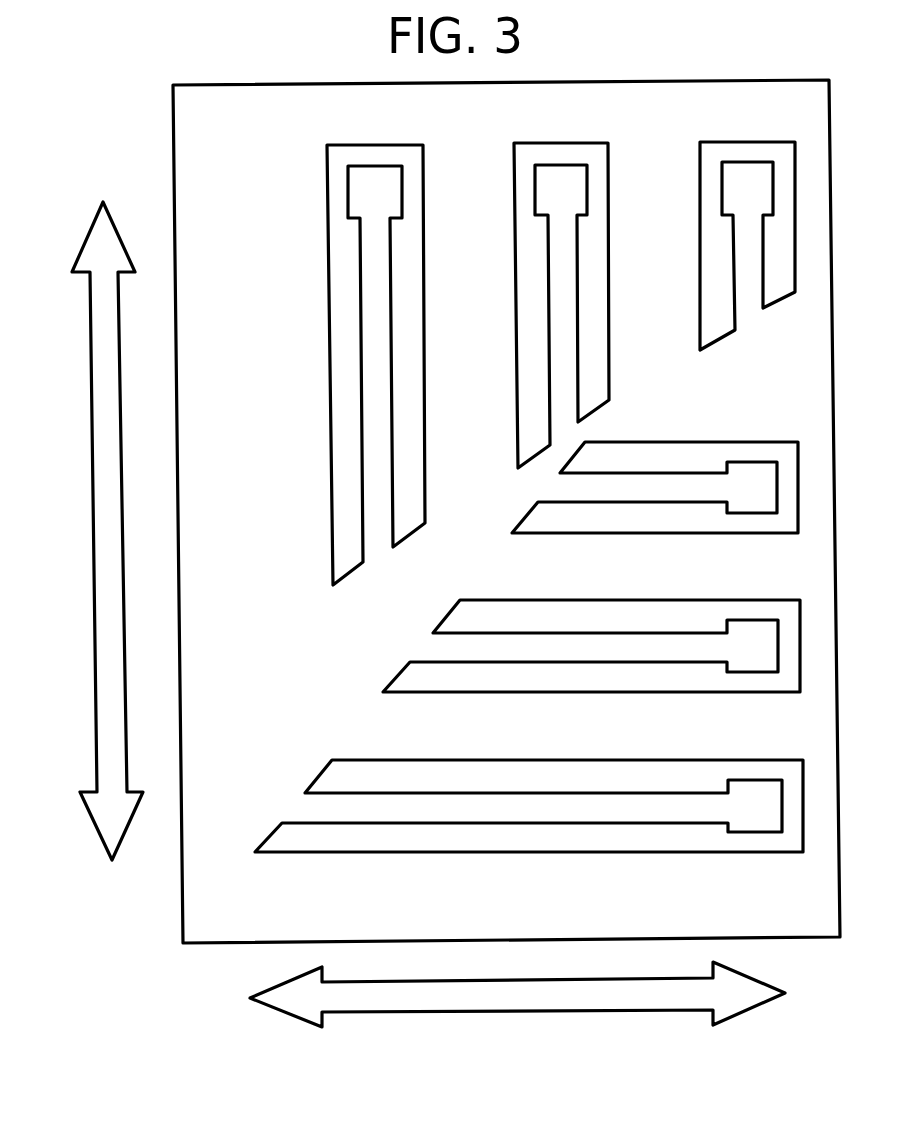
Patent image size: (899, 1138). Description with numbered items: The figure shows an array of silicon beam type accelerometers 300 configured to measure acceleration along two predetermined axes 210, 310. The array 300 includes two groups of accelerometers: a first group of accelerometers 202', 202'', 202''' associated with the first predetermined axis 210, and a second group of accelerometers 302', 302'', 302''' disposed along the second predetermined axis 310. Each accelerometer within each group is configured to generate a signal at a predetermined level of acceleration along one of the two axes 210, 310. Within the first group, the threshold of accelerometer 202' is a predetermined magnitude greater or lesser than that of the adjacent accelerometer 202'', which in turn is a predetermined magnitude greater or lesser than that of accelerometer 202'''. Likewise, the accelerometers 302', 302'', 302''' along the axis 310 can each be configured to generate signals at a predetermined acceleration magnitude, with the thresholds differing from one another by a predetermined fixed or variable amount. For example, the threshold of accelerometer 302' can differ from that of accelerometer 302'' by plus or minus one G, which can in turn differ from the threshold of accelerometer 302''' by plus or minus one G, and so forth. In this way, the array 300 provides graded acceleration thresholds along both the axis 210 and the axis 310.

The array of silicon beam type accelerometers 300 is at (140, 126).
The predetermined axis 310 is at (90, 540).
The predetermined axis 210 is at (508, 1012).
The accelerometer 202' is at (711, 246).
The accelerometer 202'' is at (527, 305).
The accelerometer 202''' is at (341, 365).
The accelerometer 302' is at (655, 515).
The accelerometer 302'' is at (591, 674).
The accelerometer 302''' is at (529, 833).